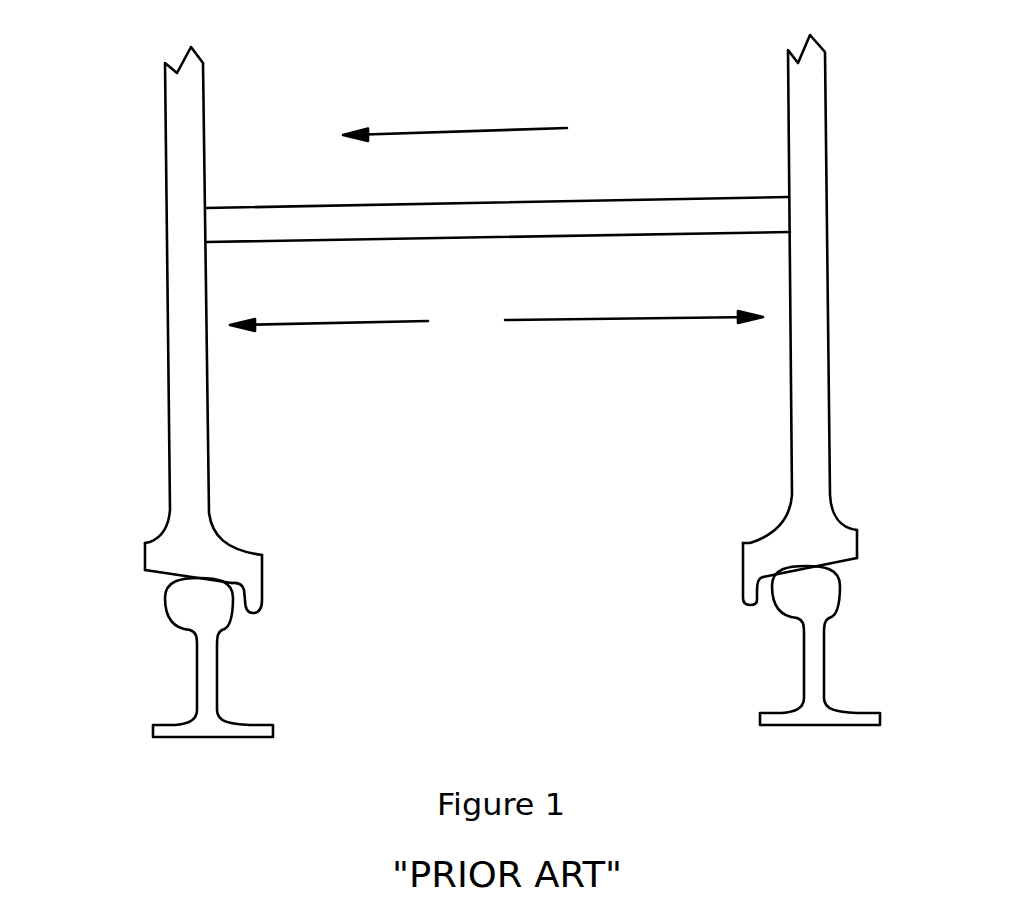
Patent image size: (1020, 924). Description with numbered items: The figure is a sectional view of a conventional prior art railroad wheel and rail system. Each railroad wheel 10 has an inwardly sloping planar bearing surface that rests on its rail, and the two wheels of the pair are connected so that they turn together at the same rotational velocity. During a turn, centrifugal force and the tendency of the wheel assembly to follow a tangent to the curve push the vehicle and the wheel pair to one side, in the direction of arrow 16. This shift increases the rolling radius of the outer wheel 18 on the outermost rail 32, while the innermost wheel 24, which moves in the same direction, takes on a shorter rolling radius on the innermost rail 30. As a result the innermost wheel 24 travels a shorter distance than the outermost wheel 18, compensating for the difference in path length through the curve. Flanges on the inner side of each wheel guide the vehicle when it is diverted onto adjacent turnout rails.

The railroad wheel 10 is at (567, 319).
The arrow 16 is at (437, 131).
The outer wheel 18 is at (207, 410).
The innermost wheel 24 is at (830, 397).
The innermost rail 30 is at (788, 637).
The outermost rail 32 is at (217, 660).